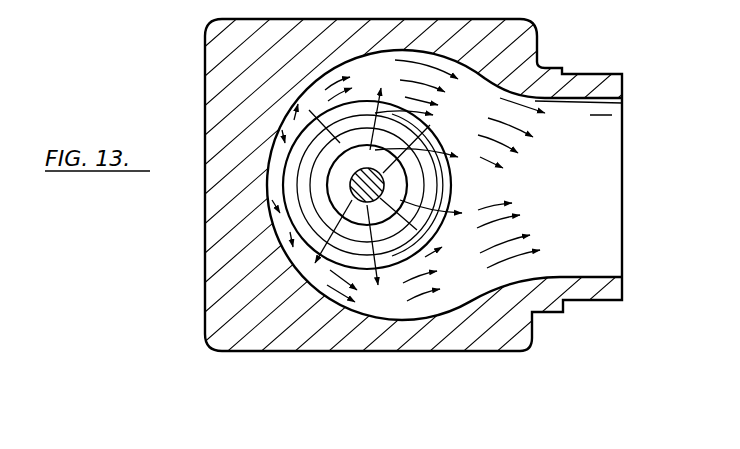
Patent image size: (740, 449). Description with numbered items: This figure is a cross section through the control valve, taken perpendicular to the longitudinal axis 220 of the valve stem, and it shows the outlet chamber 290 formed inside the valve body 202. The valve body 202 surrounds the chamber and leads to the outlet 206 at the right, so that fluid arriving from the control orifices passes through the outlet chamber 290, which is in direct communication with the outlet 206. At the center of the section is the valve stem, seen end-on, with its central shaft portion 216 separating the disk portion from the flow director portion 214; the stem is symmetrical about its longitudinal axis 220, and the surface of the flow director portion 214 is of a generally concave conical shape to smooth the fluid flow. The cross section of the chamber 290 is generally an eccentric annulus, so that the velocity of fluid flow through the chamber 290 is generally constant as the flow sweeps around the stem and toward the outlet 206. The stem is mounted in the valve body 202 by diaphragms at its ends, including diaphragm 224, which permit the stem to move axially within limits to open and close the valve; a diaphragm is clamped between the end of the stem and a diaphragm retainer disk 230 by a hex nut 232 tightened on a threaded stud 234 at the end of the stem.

The valve body 202 is at (205, 76).
The outlet 206 is at (597, 198).
The flow director portion 214 is at (295, 227).
The central shaft portion 216 is at (410, 205).
The longitudinal axis 220 is at (400, 178).
The diaphragm 224 is at (298, 173).
The diaphragm retainer disk 230 is at (362, 73).
The hex nut 232 is at (334, 6).
The threaded stud 234 is at (409, 6).
The outlet chamber 290 is at (293, 257).